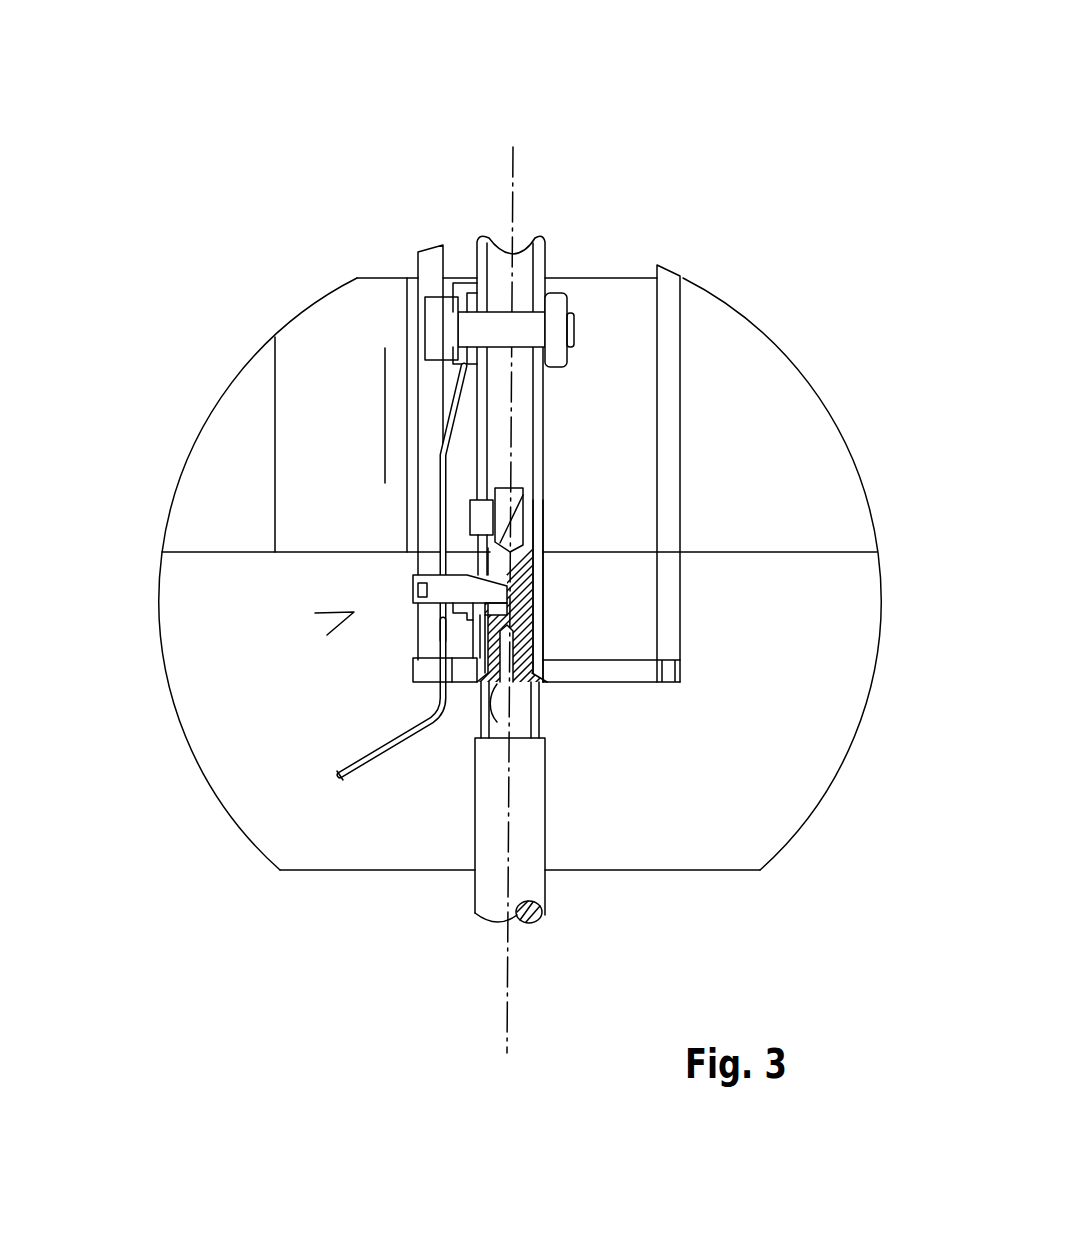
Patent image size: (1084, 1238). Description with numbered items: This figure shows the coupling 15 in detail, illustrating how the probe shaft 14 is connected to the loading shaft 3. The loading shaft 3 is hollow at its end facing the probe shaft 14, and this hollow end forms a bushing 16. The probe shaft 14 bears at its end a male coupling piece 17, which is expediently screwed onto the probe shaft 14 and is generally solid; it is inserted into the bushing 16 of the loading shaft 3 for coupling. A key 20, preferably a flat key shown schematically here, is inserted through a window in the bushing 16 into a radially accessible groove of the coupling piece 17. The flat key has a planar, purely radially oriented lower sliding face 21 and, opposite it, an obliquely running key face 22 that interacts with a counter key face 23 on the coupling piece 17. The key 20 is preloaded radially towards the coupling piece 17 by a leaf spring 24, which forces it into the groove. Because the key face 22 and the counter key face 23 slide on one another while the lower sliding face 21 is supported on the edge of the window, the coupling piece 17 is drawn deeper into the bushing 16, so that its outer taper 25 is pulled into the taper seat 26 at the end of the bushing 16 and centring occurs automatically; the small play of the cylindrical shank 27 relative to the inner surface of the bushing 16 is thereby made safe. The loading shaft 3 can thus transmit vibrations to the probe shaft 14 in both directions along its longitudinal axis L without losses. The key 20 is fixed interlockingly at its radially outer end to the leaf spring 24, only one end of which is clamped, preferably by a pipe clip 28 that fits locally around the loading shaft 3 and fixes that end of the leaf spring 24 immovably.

The loading shaft 3 is at (555, 259).
The probe shaft 14 is at (643, 816).
The coupling 15 is at (354, 612).
The bushing 16 is at (545, 612).
The coupling piece 17 is at (547, 570).
The key 20 is at (407, 590).
The lower sliding face 21 is at (281, 604).
The key face 22 is at (532, 512).
The counter key face 23 is at (525, 490).
The leaf spring 24 is at (440, 470).
The outer taper 25 is at (547, 693).
The taper seat 26 is at (482, 720).
The cylindrical shank 27 is at (547, 593).
The pipe clip 28 is at (337, 772).
The longitudinal axis L is at (513, 162).